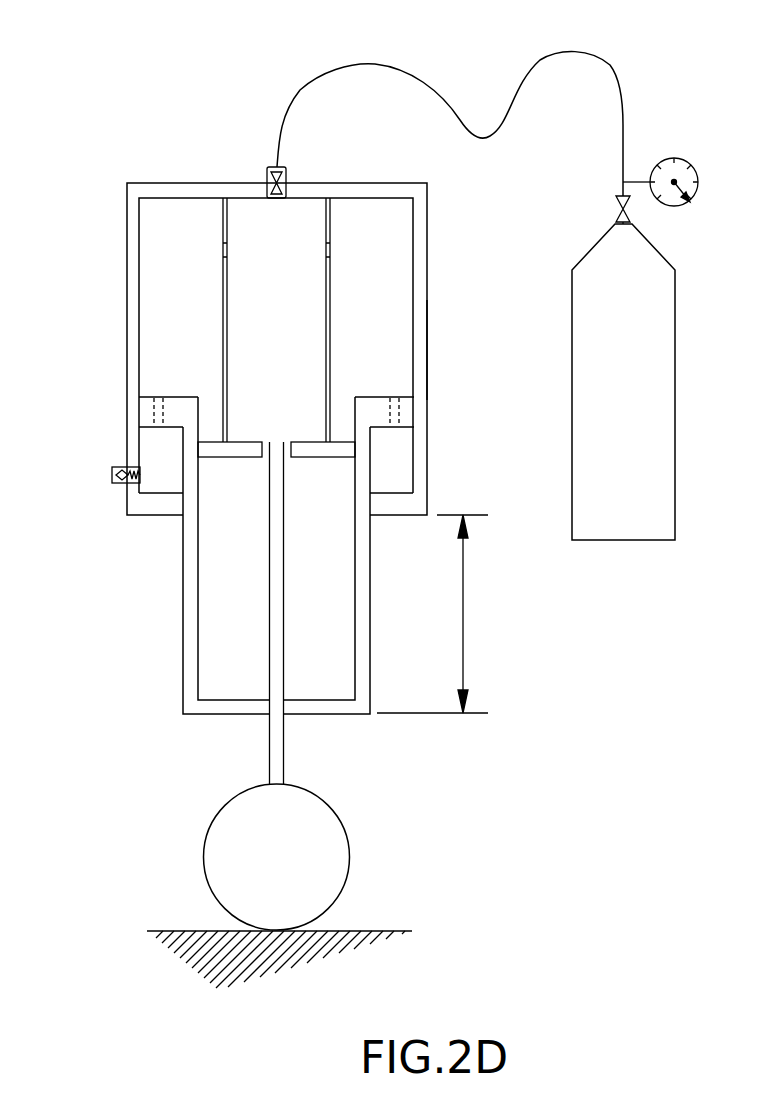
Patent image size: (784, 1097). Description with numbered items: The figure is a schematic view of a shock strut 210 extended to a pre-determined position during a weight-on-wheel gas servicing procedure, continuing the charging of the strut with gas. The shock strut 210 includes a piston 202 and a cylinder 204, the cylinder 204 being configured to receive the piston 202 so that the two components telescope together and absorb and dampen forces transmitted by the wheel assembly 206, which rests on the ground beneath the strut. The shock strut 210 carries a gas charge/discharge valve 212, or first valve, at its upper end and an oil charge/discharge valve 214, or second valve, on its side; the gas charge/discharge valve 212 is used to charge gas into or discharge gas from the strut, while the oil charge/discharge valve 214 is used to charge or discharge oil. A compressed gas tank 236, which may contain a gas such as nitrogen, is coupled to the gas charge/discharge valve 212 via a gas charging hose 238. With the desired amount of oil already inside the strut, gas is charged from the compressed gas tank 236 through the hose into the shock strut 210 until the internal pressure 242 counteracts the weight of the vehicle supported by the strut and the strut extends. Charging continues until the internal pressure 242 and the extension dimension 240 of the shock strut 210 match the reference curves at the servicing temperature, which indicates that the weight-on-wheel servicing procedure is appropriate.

The piston 202 is at (183, 620).
The cylinder 204 is at (427, 348).
The wheel assembly 206 is at (383, 827).
The shock strut 210 is at (127, 210).
The gas charge/discharge valve 212 is at (267, 175).
The oil charge/discharge valve 214 is at (112, 468).
The compressed gas tank 236 is at (572, 300).
The gas charging hose 238 is at (608, 70).
The extension dimension X2 240 is at (478, 612).
The internal pressure P2 242 is at (258, 283).